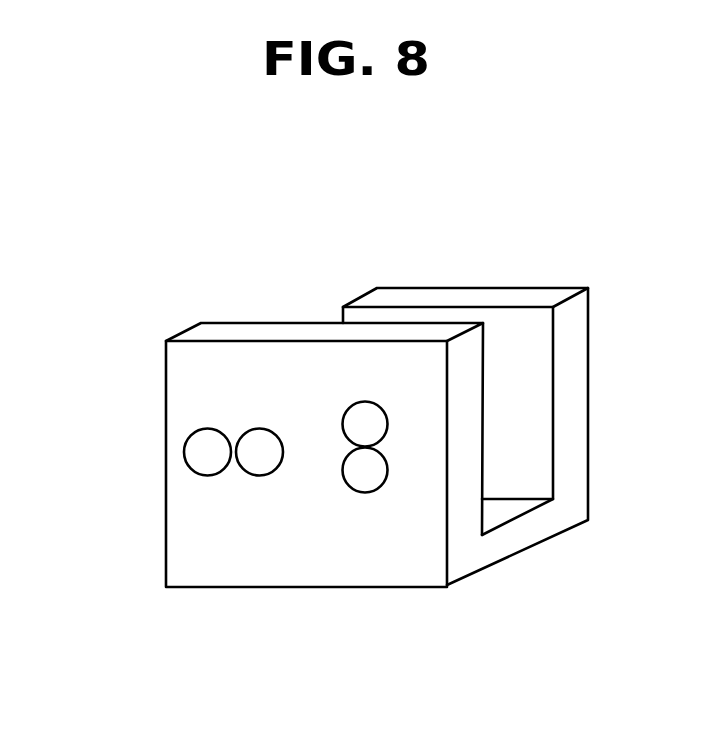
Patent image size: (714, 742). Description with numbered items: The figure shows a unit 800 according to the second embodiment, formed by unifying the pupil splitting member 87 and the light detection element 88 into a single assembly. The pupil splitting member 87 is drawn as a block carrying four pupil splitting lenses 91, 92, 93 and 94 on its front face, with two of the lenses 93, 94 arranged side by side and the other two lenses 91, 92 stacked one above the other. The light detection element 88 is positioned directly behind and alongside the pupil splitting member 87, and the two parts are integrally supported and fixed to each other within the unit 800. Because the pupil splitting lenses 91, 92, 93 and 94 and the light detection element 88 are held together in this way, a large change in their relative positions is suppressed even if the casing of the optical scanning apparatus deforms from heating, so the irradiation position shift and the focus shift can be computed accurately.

The unit 800 is at (533, 163).
The pupil splitting member 87 is at (283, 322).
The light detection element 88 is at (517, 288).
The pupil splitting lens 91 is at (388, 427).
The pupil splitting lens 92 is at (367, 492).
The pupil splitting lens 93 is at (245, 432).
The pupil splitting lens 94 is at (181, 443).